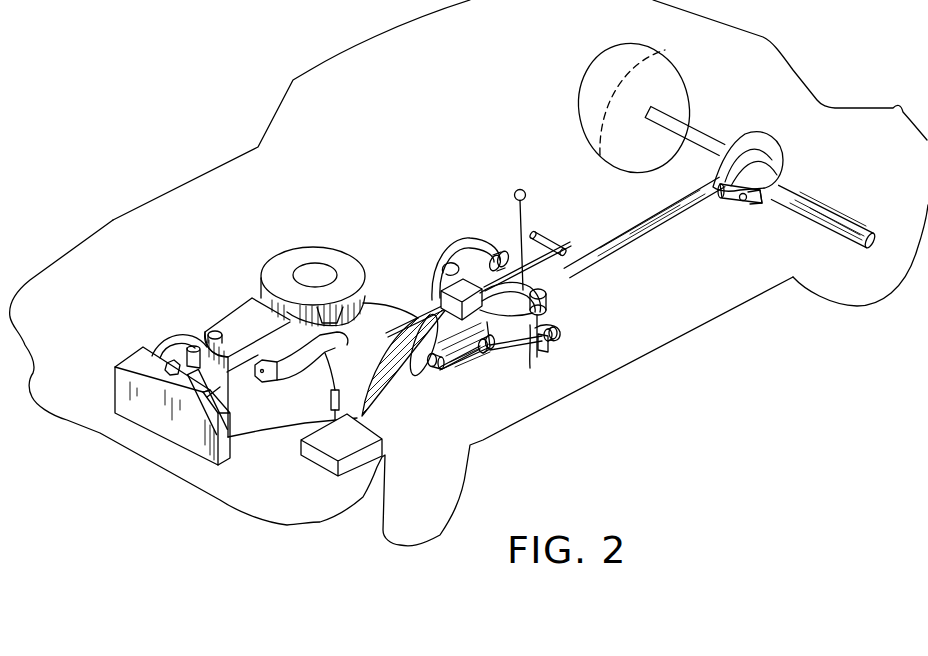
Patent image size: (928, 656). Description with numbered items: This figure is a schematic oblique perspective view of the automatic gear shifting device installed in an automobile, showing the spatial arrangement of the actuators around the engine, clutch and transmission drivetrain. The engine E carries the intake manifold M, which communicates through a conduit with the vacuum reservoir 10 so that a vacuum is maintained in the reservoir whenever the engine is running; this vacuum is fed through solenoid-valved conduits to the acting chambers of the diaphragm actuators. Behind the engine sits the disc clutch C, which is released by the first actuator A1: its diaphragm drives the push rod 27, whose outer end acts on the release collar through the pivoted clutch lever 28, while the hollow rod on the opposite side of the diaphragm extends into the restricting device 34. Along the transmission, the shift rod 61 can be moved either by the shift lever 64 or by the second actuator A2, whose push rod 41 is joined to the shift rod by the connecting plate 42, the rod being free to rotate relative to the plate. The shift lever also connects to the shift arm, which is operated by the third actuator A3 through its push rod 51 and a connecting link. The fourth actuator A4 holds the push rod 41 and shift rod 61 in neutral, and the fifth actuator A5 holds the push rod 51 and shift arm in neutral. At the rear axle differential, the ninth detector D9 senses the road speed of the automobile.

The engine E is at (371, 312).
The disc clutch C is at (419, 325).
The fourth actuator A4 is at (463, 278).
The second actuator A2 is at (483, 272).
The push rod 41 is at (510, 252).
The shift lever 64 is at (525, 206).
The connecting plate 42 is at (560, 248).
The shift rod 61 is at (597, 263).
The third actuator A3 is at (546, 303).
The fifth actuator A5 is at (553, 345).
The push rod 51 is at (541, 352).
The restricting device 34 is at (502, 350).
The first actuator A1 is at (486, 355).
The push rod 27 is at (467, 367).
The clutch lever 28 is at (433, 367).
The intake manifold M is at (278, 380).
The vacuum reservoir 10 is at (310, 462).
The ninth detector D9 is at (758, 196).